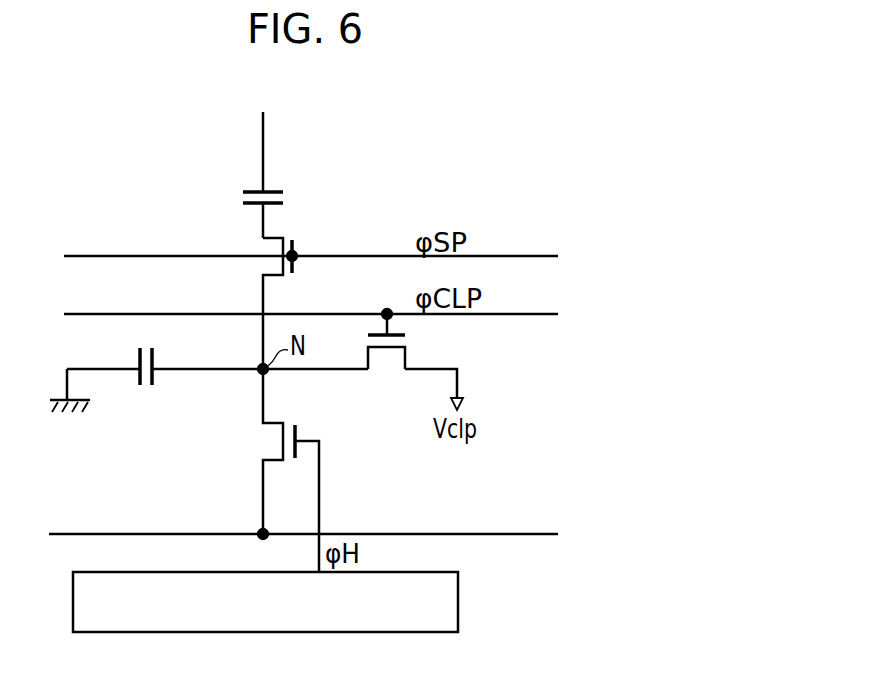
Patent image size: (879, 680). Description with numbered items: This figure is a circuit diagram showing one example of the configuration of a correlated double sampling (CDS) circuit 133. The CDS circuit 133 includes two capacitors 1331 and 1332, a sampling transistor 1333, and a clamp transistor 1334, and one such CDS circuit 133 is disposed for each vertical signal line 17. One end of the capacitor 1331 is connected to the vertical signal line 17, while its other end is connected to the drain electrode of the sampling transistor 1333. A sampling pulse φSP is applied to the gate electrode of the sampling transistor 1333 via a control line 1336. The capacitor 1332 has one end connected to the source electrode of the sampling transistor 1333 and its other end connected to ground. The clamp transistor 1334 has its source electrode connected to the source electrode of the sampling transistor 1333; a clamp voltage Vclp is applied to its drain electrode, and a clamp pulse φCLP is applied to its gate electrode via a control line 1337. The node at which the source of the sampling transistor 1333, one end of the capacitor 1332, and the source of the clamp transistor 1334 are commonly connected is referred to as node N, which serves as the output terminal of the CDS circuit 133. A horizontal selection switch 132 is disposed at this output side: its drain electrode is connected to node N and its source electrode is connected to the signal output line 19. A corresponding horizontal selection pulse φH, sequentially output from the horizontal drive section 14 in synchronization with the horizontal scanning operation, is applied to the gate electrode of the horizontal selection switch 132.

The horizontal drive section 14 is at (458, 598).
The vertical signal line 17 is at (264, 135).
The signal output line 19 is at (497, 532).
The horizontal selection switch 132 is at (272, 443).
The CDS circuit 133 is at (460, 165).
The capacitor 1331 is at (283, 199).
The capacitor 1332 is at (146, 385).
The sampling transistor 1333 is at (274, 269).
The clamp transistor 1334 is at (388, 358).
The control line 1336 is at (530, 256).
The control line 1337 is at (530, 314).